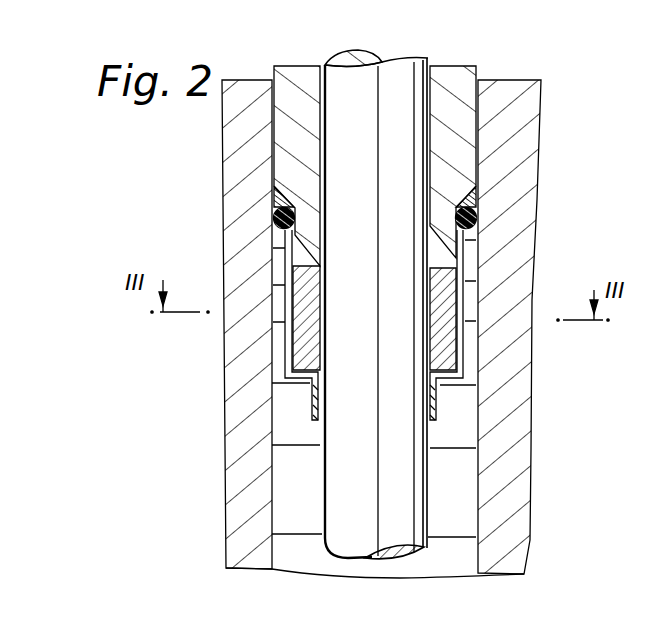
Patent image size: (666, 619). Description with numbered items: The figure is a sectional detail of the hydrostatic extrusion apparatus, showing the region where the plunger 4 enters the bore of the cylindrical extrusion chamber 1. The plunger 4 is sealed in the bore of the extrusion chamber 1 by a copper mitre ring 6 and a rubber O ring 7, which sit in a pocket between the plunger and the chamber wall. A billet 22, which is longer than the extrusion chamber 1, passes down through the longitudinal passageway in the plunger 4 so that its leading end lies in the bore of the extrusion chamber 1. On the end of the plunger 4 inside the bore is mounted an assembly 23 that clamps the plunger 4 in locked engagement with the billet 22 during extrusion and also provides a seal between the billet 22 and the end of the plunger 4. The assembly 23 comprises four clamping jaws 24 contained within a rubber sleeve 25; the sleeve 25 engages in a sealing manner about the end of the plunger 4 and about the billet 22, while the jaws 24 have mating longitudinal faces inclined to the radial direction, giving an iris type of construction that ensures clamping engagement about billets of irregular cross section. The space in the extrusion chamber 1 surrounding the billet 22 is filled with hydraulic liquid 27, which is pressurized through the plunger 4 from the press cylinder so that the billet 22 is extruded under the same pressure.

The extrusion chamber 1 is at (497, 152).
The plunger 4 is at (468, 110).
The copper mitre ring 6 is at (273, 205).
The rubber O ring 7 is at (275, 222).
The billet 22 is at (345, 148).
The assembly 23 is at (433, 347).
The clamping jaws 24 is at (300, 297).
The rubber sleeve 25 is at (290, 352).
The hydraulic liquid 27 is at (272, 455).